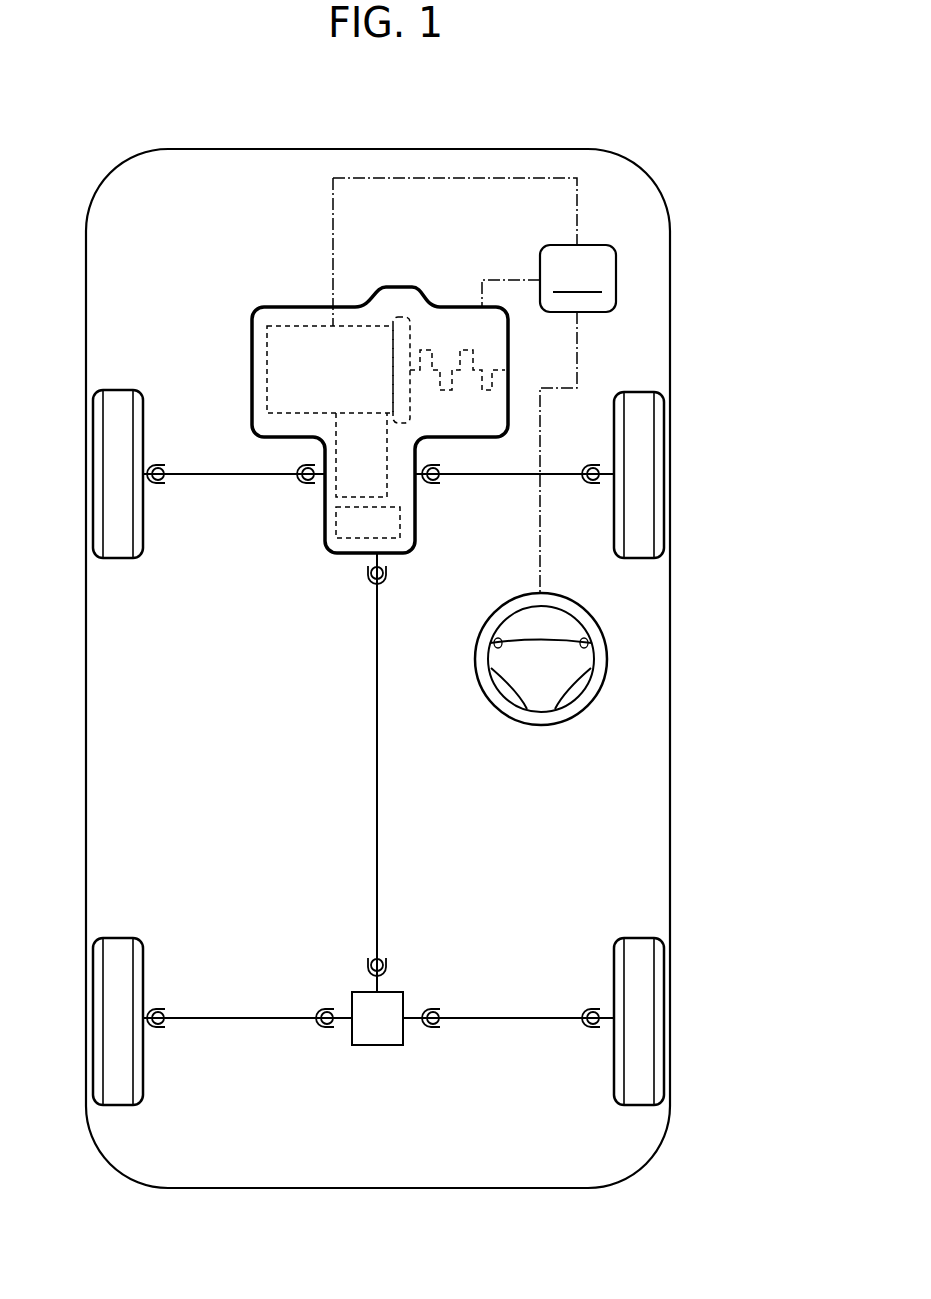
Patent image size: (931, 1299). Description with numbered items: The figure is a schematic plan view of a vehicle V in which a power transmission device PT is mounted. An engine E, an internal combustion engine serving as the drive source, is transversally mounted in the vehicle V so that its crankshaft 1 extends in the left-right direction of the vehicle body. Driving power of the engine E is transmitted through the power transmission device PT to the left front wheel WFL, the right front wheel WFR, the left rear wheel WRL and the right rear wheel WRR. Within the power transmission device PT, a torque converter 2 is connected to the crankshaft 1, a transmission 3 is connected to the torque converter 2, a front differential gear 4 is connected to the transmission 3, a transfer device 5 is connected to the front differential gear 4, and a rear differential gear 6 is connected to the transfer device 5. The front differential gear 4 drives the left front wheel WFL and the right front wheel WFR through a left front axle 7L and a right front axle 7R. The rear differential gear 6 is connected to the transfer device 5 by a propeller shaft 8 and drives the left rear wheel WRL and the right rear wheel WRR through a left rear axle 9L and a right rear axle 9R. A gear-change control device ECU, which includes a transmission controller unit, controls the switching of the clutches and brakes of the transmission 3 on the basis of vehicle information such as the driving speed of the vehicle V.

The crankshaft 1 is at (444, 390).
The torque converter 2 is at (407, 317).
The transmission 3 is at (279, 326).
The front differential gear 4 is at (387, 487).
The transfer device 5 is at (400, 517).
The rear differential gear 6 is at (375, 1032).
The left front axle 7L is at (261, 477).
The right front axle 7R is at (528, 477).
The propeller shaft 8 is at (378, 742).
The left rear axle 9L is at (262, 1020).
The right rear axle 9R is at (508, 1020).
The engine E is at (455, 303).
The gear-change control device ECU is at (474, 385).
The power transmission device PT is at (312, 271).
The vehicle V is at (643, 164).
The left front wheel WFL is at (118, 413).
The right front wheel WFR is at (640, 397).
The left rear wheel WRL is at (118, 955).
The right rear wheel WRR is at (638, 955).